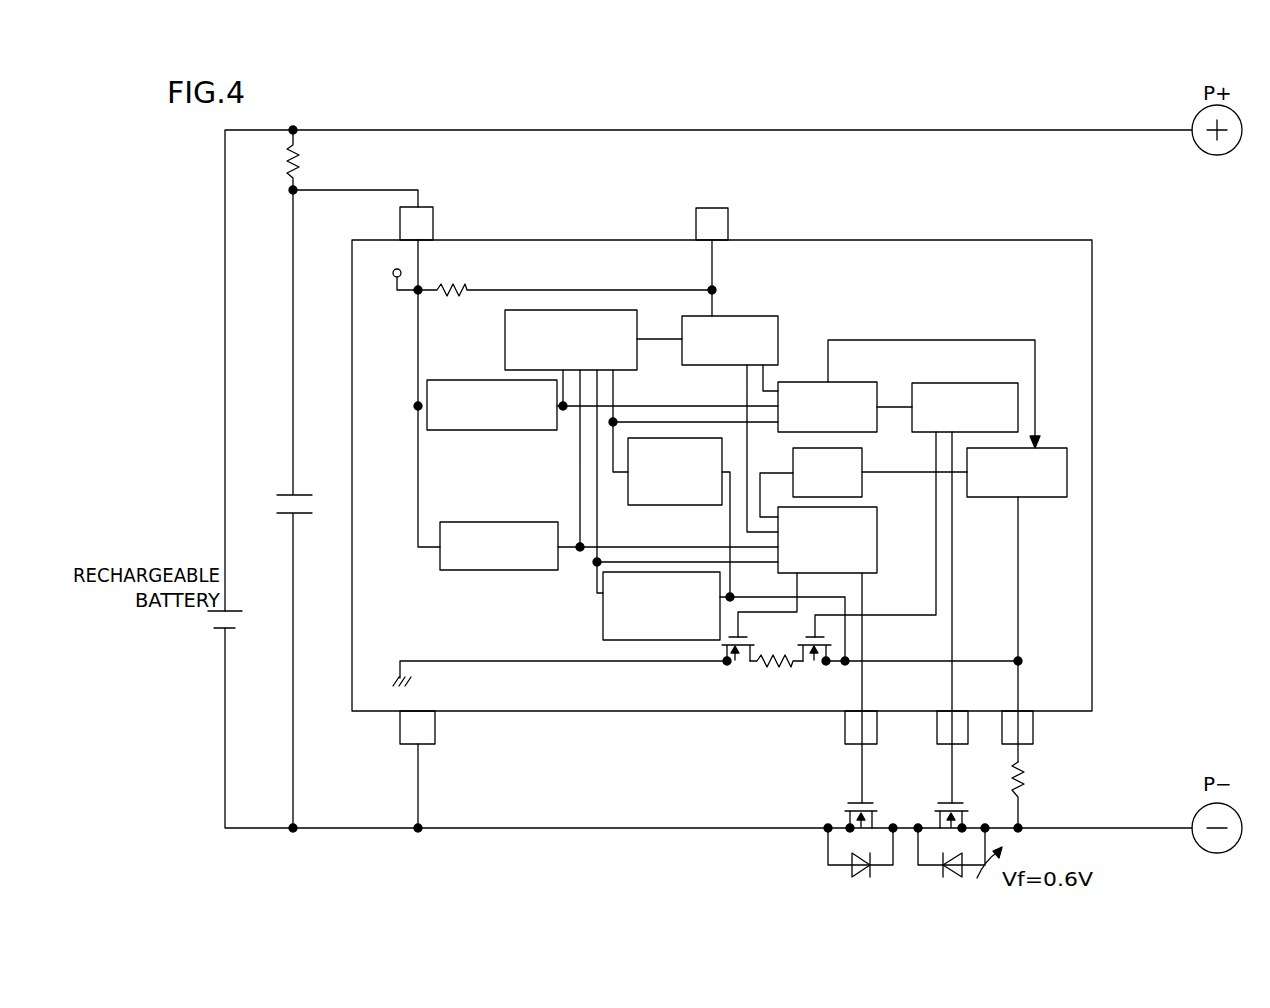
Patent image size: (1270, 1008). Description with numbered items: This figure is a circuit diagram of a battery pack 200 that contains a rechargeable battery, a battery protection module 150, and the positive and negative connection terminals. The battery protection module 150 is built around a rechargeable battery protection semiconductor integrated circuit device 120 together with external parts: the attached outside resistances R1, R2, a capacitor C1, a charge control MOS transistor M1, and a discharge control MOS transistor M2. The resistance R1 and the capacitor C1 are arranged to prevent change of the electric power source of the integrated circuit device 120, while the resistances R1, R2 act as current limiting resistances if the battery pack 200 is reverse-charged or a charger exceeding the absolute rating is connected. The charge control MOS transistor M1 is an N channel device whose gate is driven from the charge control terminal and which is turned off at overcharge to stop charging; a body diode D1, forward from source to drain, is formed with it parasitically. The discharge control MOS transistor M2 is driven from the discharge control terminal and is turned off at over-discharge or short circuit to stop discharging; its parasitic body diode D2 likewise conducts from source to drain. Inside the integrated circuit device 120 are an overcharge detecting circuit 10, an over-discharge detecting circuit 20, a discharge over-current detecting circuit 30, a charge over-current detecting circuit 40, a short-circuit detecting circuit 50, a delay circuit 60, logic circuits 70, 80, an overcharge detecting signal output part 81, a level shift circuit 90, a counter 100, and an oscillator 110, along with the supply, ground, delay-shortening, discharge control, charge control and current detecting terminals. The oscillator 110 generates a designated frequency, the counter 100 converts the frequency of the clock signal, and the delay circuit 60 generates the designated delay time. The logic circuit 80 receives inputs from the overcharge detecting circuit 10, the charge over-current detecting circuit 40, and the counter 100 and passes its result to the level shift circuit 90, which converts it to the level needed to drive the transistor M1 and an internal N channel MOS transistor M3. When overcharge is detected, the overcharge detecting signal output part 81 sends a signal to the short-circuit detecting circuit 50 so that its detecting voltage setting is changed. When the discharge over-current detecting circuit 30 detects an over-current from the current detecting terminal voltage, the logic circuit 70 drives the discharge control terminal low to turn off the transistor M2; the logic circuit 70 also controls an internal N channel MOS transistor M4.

The overcharge detecting circuit 10 is at (515, 432).
The over-discharge detecting circuit 20 is at (500, 572).
The discharge over-current detecting circuit 30 is at (602, 629).
The charge over-current detecting circuit 40 is at (672, 507).
The short-circuit detecting circuit 50 is at (1035, 498).
The delay circuit 60 is at (864, 462).
The logic circuit 70 is at (878, 520).
The logic circuit 80 is at (835, 382).
The overcharge detecting signal output part 81 is at (920, 340).
The level shift circuit 90 is at (952, 383).
The counter 100 is at (735, 315).
The oscillator 110 is at (622, 371).
The rechargeable battery protection semiconductor integrated circuit device 120 is at (862, 241).
The battery protection module 150 is at (863, 144).
The battery pack 200 is at (803, 118).
The attached outside resistance R1 is at (309, 160).
The attached outside resistance R2 is at (1036, 797).
The attached outside capacitor C1 is at (284, 511).
The charge control MOS transistor M1 is at (943, 804).
The discharge control MOS transistor M2 is at (852, 804).
The N channel MOS transistor M3 is at (908, 665).
The N channel MOS transistor M4 is at (738, 665).
The body diode D1 is at (951, 864).
The body diode D2 is at (860, 864).